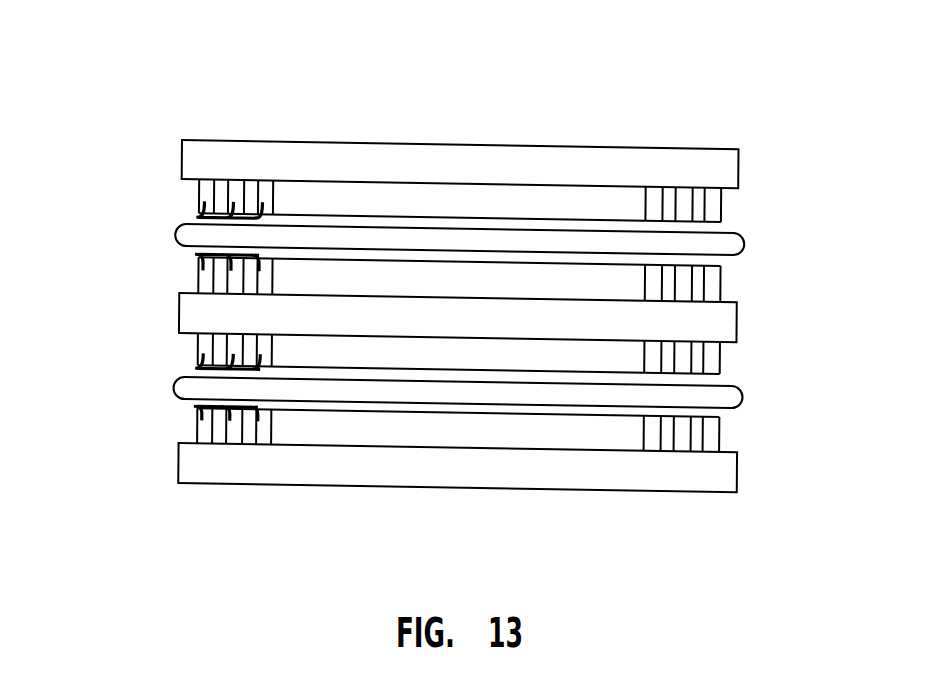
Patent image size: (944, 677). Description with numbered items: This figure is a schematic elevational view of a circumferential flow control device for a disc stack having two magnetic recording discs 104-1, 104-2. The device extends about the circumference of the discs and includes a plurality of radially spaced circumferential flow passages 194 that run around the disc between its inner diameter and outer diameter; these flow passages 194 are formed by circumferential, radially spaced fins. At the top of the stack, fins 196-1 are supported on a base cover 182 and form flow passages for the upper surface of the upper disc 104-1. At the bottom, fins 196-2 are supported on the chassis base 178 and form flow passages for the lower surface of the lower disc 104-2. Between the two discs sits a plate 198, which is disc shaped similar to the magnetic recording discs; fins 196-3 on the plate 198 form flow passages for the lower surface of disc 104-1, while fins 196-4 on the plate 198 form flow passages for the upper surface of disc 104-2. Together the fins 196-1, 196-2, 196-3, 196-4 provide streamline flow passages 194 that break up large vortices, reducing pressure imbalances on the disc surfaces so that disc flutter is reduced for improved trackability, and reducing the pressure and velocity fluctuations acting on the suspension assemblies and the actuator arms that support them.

The base cover 182 is at (510, 160).
The chassis base 178 is at (660, 477).
The plate 198 is at (178, 322).
The disc 104-1 is at (742, 240).
The disc 104-2 is at (742, 400).
The circumferential flow passages 194 is at (698, 207).
The fins 196-1 is at (199, 217).
The fins 196-2 is at (199, 406).
The fins 196-3 is at (199, 254).
The fins 196-4 is at (199, 368).